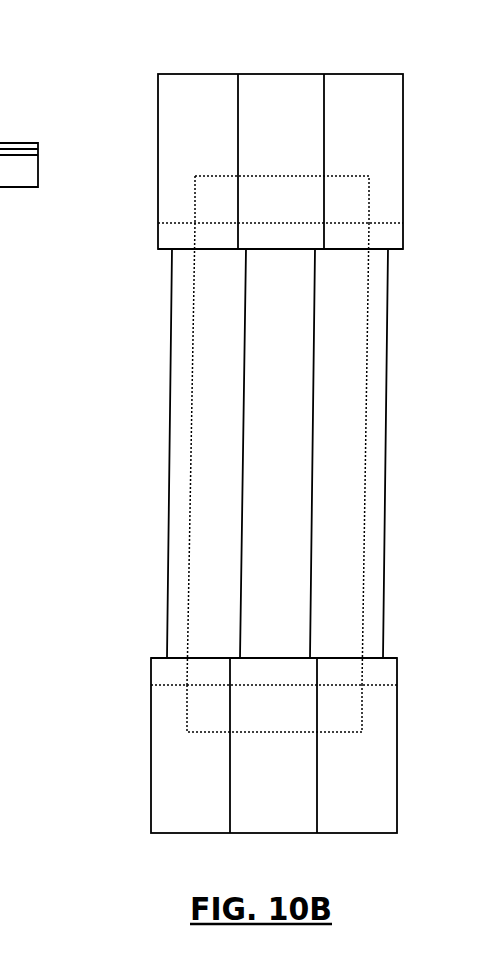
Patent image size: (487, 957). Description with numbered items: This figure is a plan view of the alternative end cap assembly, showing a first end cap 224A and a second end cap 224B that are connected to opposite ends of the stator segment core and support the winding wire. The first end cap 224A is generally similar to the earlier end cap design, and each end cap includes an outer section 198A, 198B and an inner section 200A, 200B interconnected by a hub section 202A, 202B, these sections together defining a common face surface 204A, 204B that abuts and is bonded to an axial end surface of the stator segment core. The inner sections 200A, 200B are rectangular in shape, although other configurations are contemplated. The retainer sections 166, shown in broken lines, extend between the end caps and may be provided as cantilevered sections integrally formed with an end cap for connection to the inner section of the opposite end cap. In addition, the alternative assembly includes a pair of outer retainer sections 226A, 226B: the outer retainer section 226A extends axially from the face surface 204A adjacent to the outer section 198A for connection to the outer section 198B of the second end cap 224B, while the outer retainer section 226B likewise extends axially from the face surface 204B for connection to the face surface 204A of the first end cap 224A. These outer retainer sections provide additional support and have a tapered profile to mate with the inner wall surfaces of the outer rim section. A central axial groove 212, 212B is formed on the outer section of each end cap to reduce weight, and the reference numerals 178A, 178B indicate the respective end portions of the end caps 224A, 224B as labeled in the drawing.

The retainer section 166 is at (189, 467).
The first end block 178A is at (187, 75).
The second end block 178B is at (358, 835).
The outer section 198A is at (385, 155).
The outer section 198B is at (375, 765).
The inner section 200A is at (195, 186).
The inner section 200B is at (185, 710).
The hub section 202A is at (288, 233).
The hub section 202B is at (275, 668).
The common face surface 204A is at (386, 252).
The common face surface 204B is at (370, 658).
The central axial groove 212 is at (255, 110).
The second face 212B is at (272, 817).
The first end cap 224A is at (126, 118).
The second end cap 224B is at (133, 780).
The outer retainer section 226A is at (238, 425).
The outer retainer section 226B is at (361, 425).